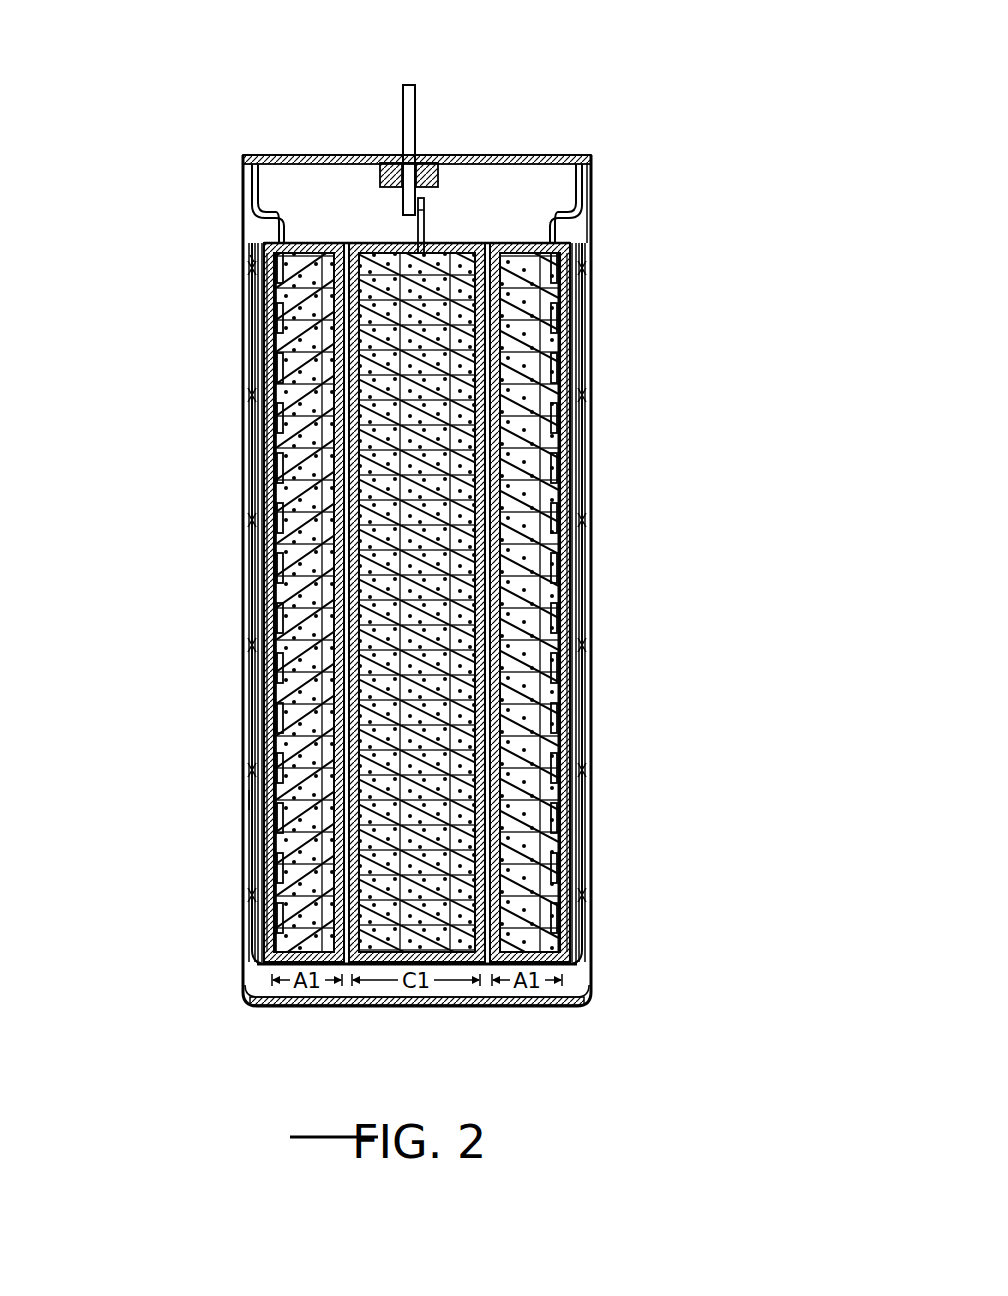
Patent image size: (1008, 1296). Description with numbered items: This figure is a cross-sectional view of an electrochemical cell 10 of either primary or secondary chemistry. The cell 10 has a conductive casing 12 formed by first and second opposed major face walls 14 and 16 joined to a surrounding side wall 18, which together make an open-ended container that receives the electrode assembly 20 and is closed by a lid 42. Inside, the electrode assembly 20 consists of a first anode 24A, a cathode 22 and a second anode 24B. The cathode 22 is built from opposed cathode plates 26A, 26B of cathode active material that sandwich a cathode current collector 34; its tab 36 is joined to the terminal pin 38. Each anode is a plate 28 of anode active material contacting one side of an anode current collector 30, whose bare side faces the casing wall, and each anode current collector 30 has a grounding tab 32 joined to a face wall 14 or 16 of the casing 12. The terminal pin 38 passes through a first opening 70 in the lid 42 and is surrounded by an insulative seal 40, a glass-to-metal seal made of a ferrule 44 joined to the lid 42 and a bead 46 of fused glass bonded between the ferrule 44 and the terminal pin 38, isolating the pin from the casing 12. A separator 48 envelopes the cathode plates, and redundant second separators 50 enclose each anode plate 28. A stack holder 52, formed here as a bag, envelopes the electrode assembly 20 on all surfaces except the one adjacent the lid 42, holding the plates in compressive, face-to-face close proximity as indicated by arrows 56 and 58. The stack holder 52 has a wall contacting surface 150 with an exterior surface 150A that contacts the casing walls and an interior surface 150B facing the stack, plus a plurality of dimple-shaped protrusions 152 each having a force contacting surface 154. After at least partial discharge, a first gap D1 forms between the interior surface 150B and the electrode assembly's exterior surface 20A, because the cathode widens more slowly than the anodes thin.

The electrochemical cell 10 is at (638, 155).
The conductive casing 12 is at (627, 307).
The first major face wall 14 is at (247, 555).
The second major face wall 16 is at (596, 398).
The surrounding side wall 18 is at (477, 1008).
The electrode assembly 20 is at (503, 203).
The exterior surface of electrode assembly 20A is at (272, 690).
The cathode 22 is at (401, 930).
The first anode 24A is at (291, 240).
The second anode 24B is at (505, 250).
The cathode plate 26A is at (345, 948).
The cathode plate 26B is at (452, 928).
The anode plate 28 is at (282, 641).
The anode current collector 30 is at (290, 503).
The grounding tab 32 is at (258, 240).
The cathode current collector 34 is at (425, 862).
The tab 36 is at (430, 212).
The terminal pin 38 is at (403, 85).
The seal 40 is at (421, 160).
The lid 42 is at (573, 155).
The ferrule 44 is at (388, 158).
The bead 46 is at (393, 157).
The separator 48 is at (484, 1000).
The second separator 50 is at (581, 208).
The stack holder 52 is at (598, 352).
The arrow 56 is at (668, 585).
The arrow 58 is at (150, 597).
The first opening 70 is at (430, 158).
The wall contacting surface 150 is at (246, 722).
The exterior surface of wall contacting surface 150A is at (260, 802).
The interior surface of wall contacting surface 150B is at (590, 683).
The protrusion 152 is at (580, 520).
The force contacting surface 154 is at (262, 268).
The first gap D1 is at (246, 996).